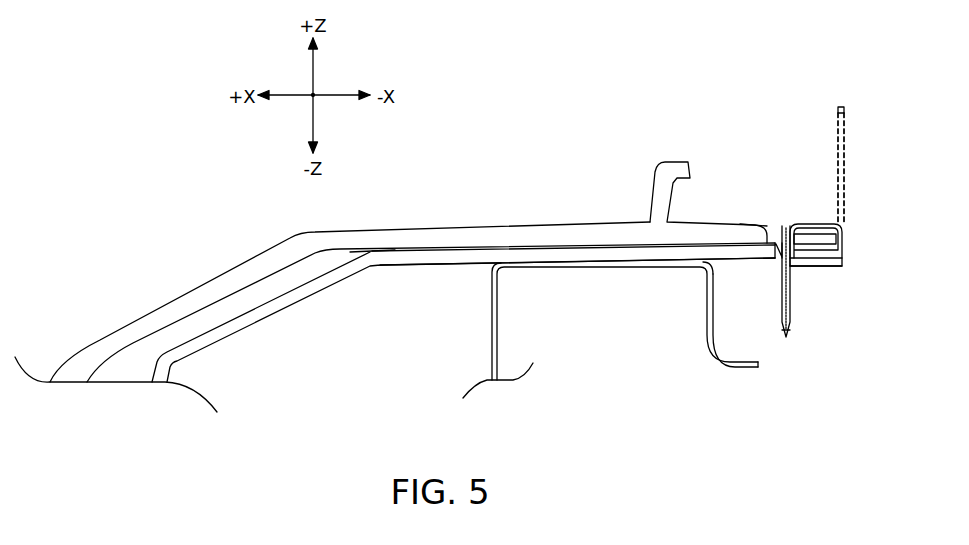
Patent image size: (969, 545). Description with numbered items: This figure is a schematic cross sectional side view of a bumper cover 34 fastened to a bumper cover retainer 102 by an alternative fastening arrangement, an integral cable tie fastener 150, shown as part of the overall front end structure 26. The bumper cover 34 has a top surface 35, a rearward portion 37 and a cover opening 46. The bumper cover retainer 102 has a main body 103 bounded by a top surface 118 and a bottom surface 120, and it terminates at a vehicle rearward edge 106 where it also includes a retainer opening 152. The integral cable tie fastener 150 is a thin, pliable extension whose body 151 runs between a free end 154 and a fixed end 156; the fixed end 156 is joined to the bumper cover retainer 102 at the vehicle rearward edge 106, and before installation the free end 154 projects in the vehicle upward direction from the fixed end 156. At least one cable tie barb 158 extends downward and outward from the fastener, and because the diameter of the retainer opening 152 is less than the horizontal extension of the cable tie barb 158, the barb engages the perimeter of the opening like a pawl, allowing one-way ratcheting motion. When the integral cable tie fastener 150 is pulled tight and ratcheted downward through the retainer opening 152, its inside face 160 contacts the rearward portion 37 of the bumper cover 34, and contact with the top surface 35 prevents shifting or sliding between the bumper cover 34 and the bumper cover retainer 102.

The vehicle body structure 26 is at (207, 165).
The bumper cover 34 is at (127, 328).
The top surface of the bumper cover 35 is at (481, 228).
The rearward portion of the bumper cover 37 is at (832, 232).
The cover opening 46 is at (773, 226).
The bumper cover retainer 102 is at (226, 327).
The main body 103 is at (345, 277).
The vehicle rearward edge 106 is at (838, 262).
The top surface 118 is at (372, 250).
The bottom surface 120 is at (447, 270).
The integral cable tie fastener 150 is at (815, 330).
The body 151 is at (847, 110).
The retainer opening 152 is at (772, 267).
The free end 154 is at (841, 107).
The fixed end 156 is at (843, 247).
The cable tie barb 158 is at (777, 255).
The inside face 160 is at (834, 122).